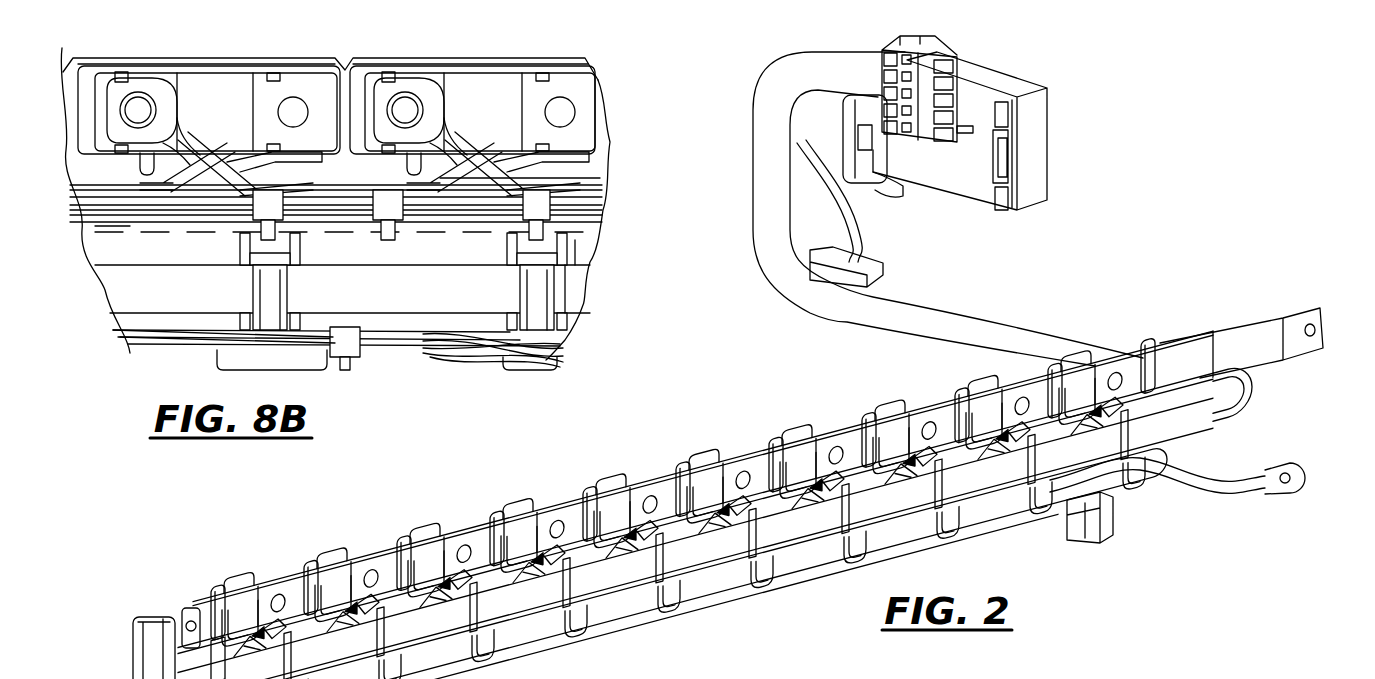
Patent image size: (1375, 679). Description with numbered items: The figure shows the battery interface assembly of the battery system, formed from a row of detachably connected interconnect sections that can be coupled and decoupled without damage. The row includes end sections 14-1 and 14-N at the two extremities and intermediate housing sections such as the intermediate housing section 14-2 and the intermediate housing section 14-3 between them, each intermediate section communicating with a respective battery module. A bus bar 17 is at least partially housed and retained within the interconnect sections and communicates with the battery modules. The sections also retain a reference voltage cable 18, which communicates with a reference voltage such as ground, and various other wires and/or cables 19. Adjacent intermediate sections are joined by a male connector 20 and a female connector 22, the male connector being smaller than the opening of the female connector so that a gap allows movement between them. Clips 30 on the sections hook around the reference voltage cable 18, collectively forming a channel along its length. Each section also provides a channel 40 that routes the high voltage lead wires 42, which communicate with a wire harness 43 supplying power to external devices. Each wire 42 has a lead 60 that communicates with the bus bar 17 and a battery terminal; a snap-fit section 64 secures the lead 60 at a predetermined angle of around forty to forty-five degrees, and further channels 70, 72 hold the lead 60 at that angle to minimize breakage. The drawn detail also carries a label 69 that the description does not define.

In FIG. 2, the end section 14-1 is at (150, 615).
In FIG. 8B, the intermediate housing section 14-2 is at (240, 64).
In FIG. 2, the intermediate housing section 14-2 is at (263, 583).
In FIG. 8B, the intermediate housing section 14-3 is at (497, 65).
In FIG. 2, the end section 14-N is at (1185, 343).
In FIG. 2, the bus bar 17 is at (743, 478).
In FIG. 8B, the reference voltage cable 18 is at (572, 292).
In FIG. 2, the reference voltage cable 18 is at (1235, 507).
In FIG. 8B, the wires and/or cables 19 is at (472, 356).
In FIG. 2, the wires and/or cables 19 is at (797, 583).
In FIG. 8B, the male connector 20 is at (134, 70).
In FIG. 8B, the female connector 22 is at (100, 62).
In FIG. 8B, the clip 30 is at (248, 303).
In FIG. 8B, the channel 40 is at (585, 235).
In FIG. 2, the channel 40 is at (680, 556).
In FIG. 8B, the high voltage lead wire 42 is at (587, 210).
In FIG. 2, the high voltage lead wire 42 is at (582, 545).
In FIG. 2, the wire harness 43 is at (780, 67).
In FIG. 8B, the lead 60 is at (152, 99).
In FIG. 2, the lead 60 is at (197, 613).
In FIG. 8B, the snap-fit section 64 is at (222, 158).
In FIG. 8B, the interconnect strap 69 is at (553, 197).
In FIG. 8B, the channel 70 is at (190, 168).
In FIG. 8B, the channel 72 is at (408, 170).